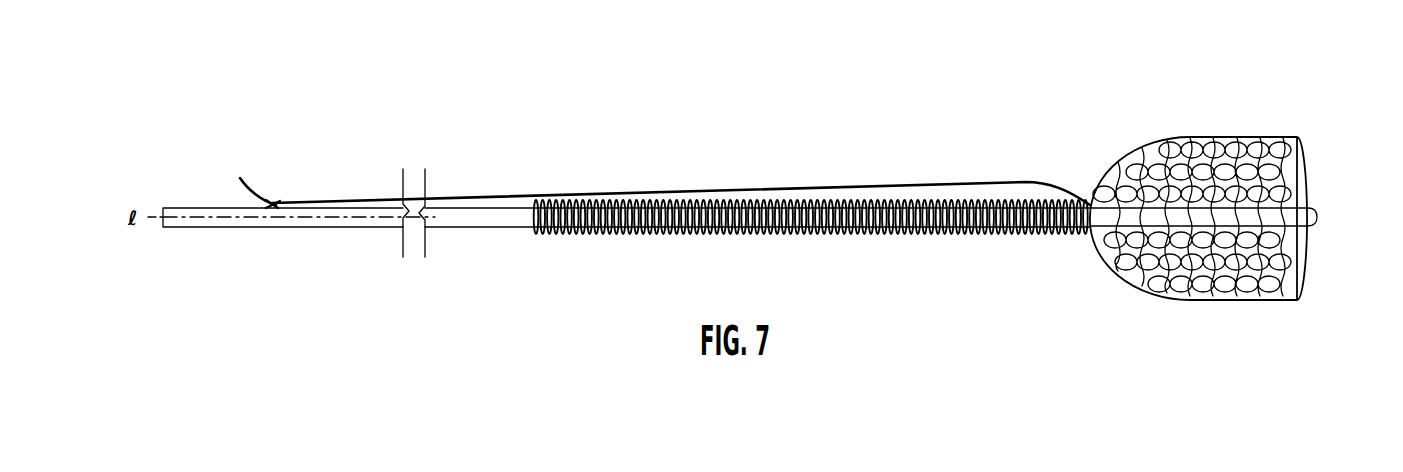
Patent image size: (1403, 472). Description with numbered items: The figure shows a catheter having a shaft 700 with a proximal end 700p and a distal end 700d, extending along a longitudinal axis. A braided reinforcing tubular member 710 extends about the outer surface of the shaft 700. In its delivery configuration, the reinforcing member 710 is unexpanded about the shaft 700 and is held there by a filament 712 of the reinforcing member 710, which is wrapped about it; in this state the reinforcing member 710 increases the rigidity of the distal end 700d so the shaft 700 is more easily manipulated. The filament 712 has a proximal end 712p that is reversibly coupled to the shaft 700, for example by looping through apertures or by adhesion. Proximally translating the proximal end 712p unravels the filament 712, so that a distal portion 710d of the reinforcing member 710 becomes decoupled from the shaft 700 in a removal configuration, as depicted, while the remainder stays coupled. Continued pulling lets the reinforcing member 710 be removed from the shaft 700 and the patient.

The shaft 700 is at (512, 218).
The proximal end 700p is at (198, 207).
The distal end 700d is at (1318, 216).
The braided reinforcing tubular member 710 is at (945, 205).
The distal portion 710d is at (1247, 137).
The filament 712 is at (1006, 200).
The proximal end of the filament 712p is at (274, 203).